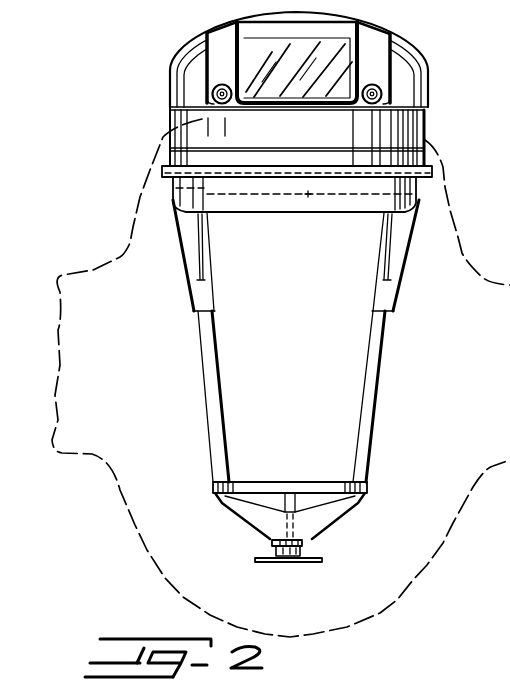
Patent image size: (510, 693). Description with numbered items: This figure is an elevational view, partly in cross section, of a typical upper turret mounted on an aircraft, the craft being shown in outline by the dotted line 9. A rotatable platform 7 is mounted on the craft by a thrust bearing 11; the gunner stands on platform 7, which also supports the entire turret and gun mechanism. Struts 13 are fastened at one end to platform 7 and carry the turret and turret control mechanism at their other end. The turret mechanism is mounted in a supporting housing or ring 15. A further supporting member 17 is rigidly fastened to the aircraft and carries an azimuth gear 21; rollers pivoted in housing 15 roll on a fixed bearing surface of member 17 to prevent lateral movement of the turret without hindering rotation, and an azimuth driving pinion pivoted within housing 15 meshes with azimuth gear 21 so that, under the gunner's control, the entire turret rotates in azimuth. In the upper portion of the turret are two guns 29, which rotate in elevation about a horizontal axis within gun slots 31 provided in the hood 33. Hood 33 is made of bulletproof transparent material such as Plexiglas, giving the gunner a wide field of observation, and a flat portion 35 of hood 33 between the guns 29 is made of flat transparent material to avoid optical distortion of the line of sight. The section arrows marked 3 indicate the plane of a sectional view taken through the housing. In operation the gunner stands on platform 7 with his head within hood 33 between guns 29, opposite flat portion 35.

The section line 3- 3 is at (297, 232).
The rotatable platform 7 is at (278, 482).
The dotted line 9 is at (437, 555).
The thrust bearing 11 is at (305, 553).
The struts 13 is at (360, 398).
The supporting housing 15 is at (307, 112).
The supporting member 17 is at (426, 174).
The azimuth gear 21 is at (423, 181).
The guns 29 is at (210, 83).
The gun slots 31 is at (203, 43).
The hood 33 is at (261, 20).
The flat portion 35 is at (340, 52).